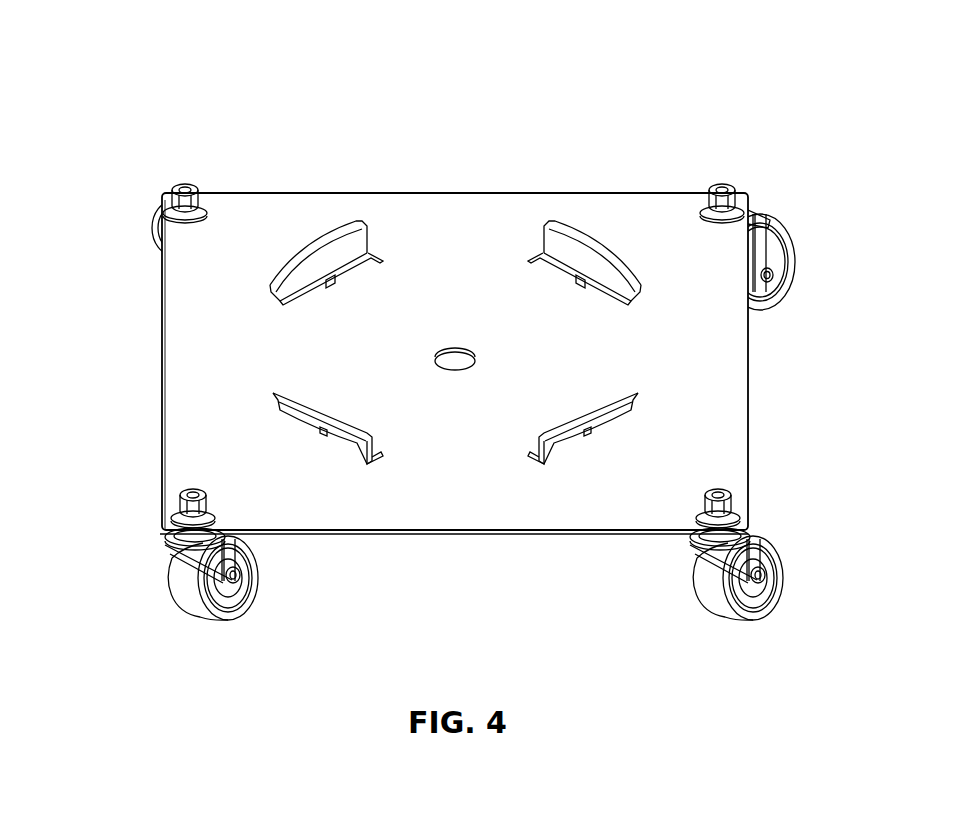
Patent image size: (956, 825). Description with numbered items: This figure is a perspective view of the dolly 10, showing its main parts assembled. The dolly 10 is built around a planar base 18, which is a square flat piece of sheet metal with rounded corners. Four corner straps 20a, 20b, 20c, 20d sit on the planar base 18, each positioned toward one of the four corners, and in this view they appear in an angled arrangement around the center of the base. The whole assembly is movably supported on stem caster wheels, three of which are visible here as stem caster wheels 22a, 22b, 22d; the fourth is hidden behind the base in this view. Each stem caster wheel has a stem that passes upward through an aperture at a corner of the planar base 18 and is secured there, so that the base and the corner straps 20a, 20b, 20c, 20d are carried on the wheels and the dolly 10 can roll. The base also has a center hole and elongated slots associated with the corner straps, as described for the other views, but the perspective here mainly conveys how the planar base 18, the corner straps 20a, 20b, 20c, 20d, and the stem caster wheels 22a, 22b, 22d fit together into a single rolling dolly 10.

The dolly 10 is at (134, 44).
The planar base 18 is at (465, 205).
The corner strap 20a is at (557, 452).
The corner strap 20b is at (558, 248).
The corner strap 20c is at (357, 247).
The corner strap 20d is at (338, 465).
The stem caster wheel 22a is at (712, 587).
The stem caster wheel 22b is at (790, 243).
The stem caster wheel 22d is at (183, 585).